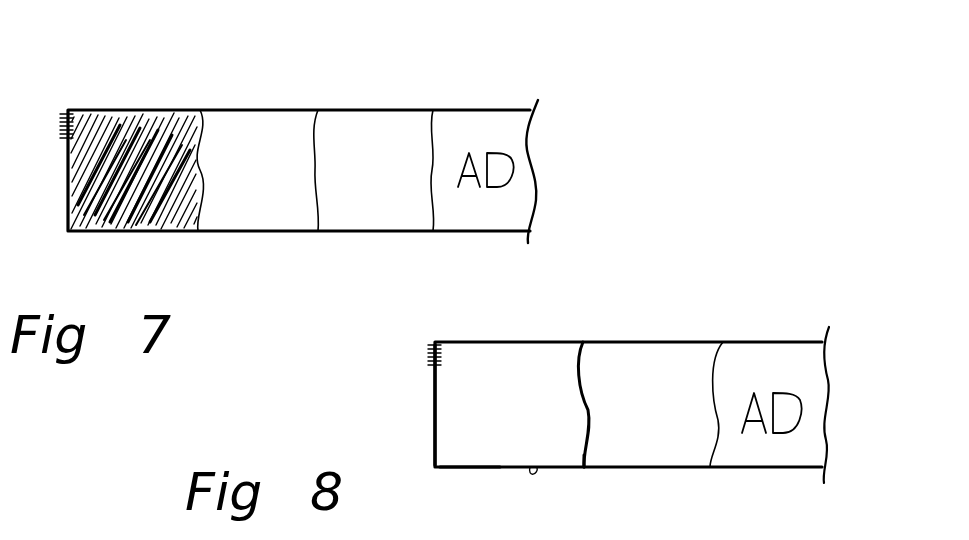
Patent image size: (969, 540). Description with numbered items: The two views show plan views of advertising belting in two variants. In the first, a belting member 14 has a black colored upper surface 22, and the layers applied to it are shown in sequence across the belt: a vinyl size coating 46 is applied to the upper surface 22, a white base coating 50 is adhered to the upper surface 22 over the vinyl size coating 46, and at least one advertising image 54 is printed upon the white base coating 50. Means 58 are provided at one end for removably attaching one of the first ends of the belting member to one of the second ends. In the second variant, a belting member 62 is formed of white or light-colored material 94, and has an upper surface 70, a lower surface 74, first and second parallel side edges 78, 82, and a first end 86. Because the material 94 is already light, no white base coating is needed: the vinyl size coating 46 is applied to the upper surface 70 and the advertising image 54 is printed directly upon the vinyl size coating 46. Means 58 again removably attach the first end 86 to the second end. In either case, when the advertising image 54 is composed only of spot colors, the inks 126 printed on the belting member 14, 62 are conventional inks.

In FIG. 7, the means for removably attaching 58 is at (58, 126).
In FIG. 8, the means for removably attaching 58 is at (428, 357).
In FIG. 7, the upper surface 22 is at (175, 125).
In FIG. 7, the belting member 14 is at (130, 208).
In FIG. 7, the vinyl size coating 46 is at (268, 120).
In FIG. 8, the vinyl size coating 46 is at (643, 367).
In FIG. 7, the white base coating 50 is at (369, 132).
In FIG. 7, the advertising image 54 is at (481, 118).
In FIG. 8, the advertising image 54 is at (748, 357).
In FIG. 7, the inks 126 is at (503, 168).
In FIG. 8, the inks 126 is at (775, 433).
In FIG. 8, the belting member 62 is at (452, 350).
In FIG. 8, the upper surface 70 is at (477, 353).
In FIG. 8, the first parallel side edge 78 is at (581, 342).
In FIG. 8, the second parallel side edge 82 is at (598, 470).
In FIG. 8, the first end 86 is at (435, 403).
In FIG. 8, the lower surface 74 is at (537, 467).
In FIG. 8, the white or light-colored material 94 is at (463, 437).